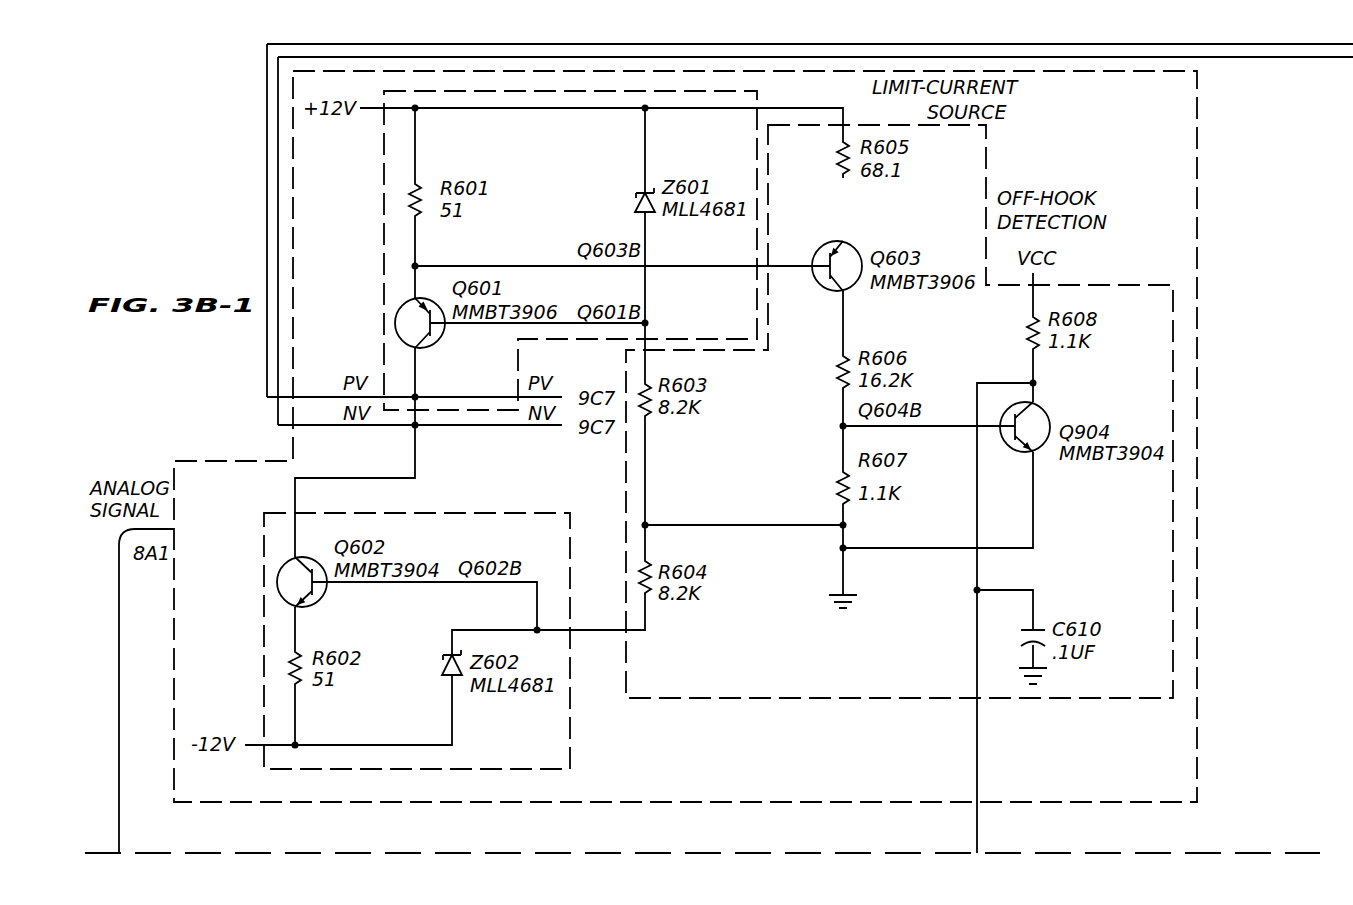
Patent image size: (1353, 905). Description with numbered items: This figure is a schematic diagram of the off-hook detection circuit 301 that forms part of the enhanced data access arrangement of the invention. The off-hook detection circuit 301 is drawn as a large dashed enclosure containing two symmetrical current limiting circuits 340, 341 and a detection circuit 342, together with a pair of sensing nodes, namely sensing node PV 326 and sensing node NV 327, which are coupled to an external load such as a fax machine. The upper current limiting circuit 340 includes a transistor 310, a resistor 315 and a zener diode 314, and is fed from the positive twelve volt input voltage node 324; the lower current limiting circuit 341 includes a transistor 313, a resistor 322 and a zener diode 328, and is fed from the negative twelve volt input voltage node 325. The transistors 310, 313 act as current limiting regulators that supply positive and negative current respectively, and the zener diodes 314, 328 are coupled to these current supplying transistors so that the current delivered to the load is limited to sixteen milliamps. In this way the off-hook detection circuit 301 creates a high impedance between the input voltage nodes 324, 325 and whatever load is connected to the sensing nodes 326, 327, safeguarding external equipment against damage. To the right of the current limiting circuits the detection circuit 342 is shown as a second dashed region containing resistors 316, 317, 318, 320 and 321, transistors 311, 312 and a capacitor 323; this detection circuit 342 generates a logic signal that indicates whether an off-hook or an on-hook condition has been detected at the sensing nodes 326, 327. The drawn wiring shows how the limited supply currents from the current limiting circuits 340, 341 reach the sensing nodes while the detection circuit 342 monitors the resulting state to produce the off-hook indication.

The off-hook detection circuit 301 is at (1198, 148).
The transistor 310 is at (440, 336).
The transistor 311 is at (852, 246).
The transistor 312 is at (1040, 404).
The transistor 313 is at (318, 598).
The zener diode 314 is at (635, 203).
The resistor 315 is at (415, 186).
The resistor 316 is at (840, 167).
The resistor 317 is at (840, 376).
The resistor 318 is at (840, 492).
The resistor 320 is at (648, 562).
The resistor 321 is at (1028, 340).
The resistor 322 is at (297, 690).
The capacitor 323 is at (1036, 623).
The input voltage node 324 is at (355, 110).
The input voltage node 325 is at (262, 745).
The sensing node PV 326 is at (560, 398).
The sensing node NV 327 is at (540, 427).
The zener diode 328 is at (443, 660).
The current limiting circuit 340 is at (382, 205).
The current limiting circuit 341 is at (570, 683).
The detection circuit 342 is at (1062, 700).